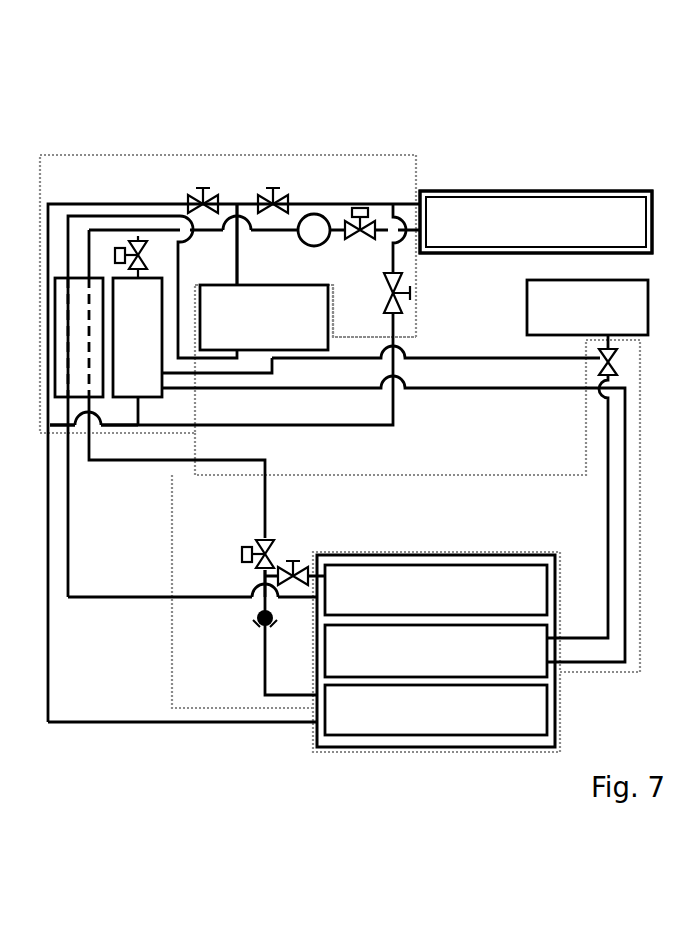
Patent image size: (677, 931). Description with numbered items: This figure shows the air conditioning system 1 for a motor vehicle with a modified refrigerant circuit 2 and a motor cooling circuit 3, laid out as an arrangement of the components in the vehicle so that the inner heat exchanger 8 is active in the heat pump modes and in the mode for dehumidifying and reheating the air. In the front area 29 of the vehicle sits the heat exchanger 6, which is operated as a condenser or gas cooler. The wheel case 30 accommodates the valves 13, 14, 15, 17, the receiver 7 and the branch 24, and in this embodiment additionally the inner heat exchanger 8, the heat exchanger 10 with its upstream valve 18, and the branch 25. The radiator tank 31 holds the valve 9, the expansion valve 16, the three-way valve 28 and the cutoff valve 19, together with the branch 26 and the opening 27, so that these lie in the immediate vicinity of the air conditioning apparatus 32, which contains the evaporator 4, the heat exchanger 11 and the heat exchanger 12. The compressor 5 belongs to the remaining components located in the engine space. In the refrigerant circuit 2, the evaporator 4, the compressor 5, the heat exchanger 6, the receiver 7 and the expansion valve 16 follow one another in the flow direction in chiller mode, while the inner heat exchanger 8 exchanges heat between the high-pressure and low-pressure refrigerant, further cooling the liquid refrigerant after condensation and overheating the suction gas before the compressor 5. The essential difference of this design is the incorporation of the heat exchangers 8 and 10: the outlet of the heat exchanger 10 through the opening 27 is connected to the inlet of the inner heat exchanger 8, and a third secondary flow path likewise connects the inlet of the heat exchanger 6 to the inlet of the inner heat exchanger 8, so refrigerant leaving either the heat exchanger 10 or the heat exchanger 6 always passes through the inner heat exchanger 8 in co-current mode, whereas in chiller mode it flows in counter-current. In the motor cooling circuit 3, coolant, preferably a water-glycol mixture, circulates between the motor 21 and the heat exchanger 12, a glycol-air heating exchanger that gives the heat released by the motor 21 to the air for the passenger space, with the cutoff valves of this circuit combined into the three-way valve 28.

The air conditioning system 1 is at (352, 402).
The refrigerant circuit 2 is at (86, 548).
The motor cooling circuit 3 is at (592, 532).
The evaporator 4 is at (436, 590).
The compressor 5 is at (264, 317).
The heat exchanger 6 is at (536, 222).
The receiver 7 is at (320, 214).
The inner heat exchanger 8 is at (63, 323).
The valve 9 is at (294, 566).
The heat exchanger 10 is at (137, 337).
The heat exchanger 11 is at (436, 710).
The heat exchanger 12 is at (436, 651).
The valve 13 is at (203, 195).
The valve 14 is at (275, 195).
The valve 15 is at (411, 293).
The expansion valve 16 is at (242, 553).
The valve 17 is at (364, 206).
The valve 18 is at (142, 256).
The cutoff valve 19 is at (258, 629).
The motor 21 is at (587, 307).
The branch 24 is at (240, 197).
The branch 25 is at (138, 243).
The branch 26 is at (270, 578).
The opening 27 is at (72, 422).
The three-way valve 28 is at (602, 368).
The front area 29 is at (512, 190).
The wheel case 30 is at (307, 158).
The radiator tank 31 is at (213, 702).
The air conditioning apparatus 32 is at (425, 742).